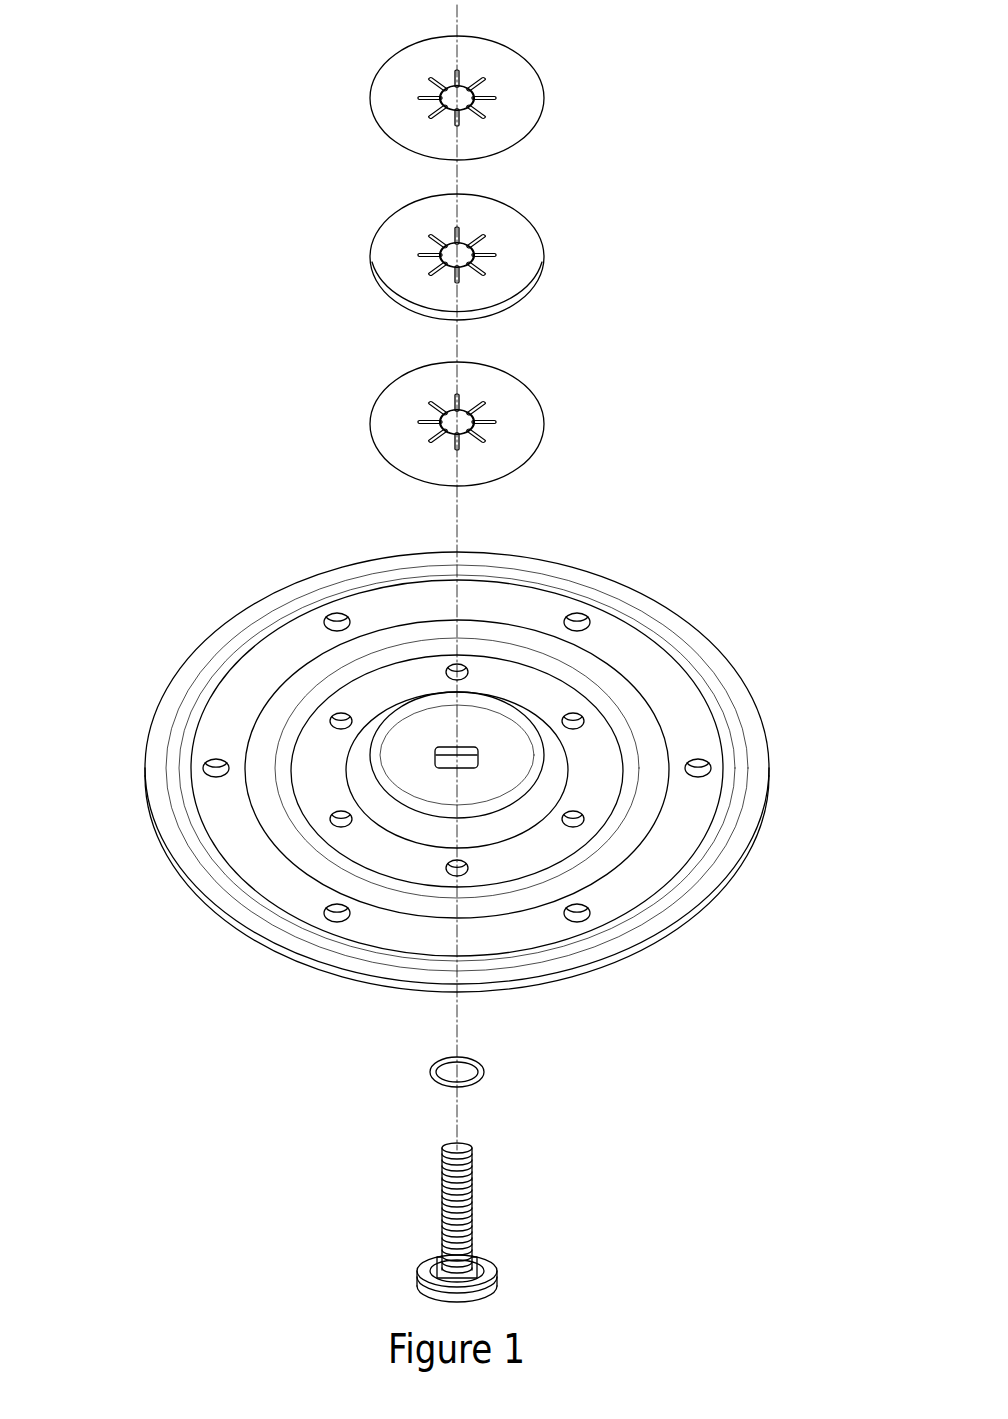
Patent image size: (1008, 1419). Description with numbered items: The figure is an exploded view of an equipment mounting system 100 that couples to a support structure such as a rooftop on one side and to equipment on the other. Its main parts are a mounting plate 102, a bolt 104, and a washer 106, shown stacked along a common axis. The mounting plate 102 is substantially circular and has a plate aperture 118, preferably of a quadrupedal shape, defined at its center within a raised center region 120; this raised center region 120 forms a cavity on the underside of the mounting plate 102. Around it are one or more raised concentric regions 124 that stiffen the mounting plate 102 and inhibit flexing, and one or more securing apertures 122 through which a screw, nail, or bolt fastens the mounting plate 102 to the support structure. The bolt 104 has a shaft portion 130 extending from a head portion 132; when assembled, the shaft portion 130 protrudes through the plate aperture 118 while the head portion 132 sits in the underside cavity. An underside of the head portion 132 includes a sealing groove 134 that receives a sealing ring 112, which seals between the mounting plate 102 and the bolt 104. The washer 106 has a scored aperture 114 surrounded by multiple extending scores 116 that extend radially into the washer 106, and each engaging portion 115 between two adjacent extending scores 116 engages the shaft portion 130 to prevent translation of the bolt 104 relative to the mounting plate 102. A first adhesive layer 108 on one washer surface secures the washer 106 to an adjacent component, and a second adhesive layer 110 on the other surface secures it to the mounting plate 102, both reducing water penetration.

The equipment mounting system 100 is at (215, 52).
The mounting plate 102 is at (465, 754).
The bolt 104 is at (450, 1227).
The washer 106 is at (458, 257).
The first adhesive layer 108 is at (540, 98).
The second adhesive layer 110 is at (535, 420).
The sealing ring 112 is at (487, 1072).
The scored aperture 114 is at (427, 254).
The engaging portion 115 is at (427, 245).
The extending scores 116 is at (473, 240).
The plate aperture 118 is at (452, 762).
The raised center region 120 is at (420, 732).
The securing apertures 122 is at (576, 618).
The raised concentric regions 124 is at (625, 695).
The shaft portion 130 is at (463, 1150).
The head portion 132 is at (422, 1287).
The sealing groove 134 is at (432, 1258).